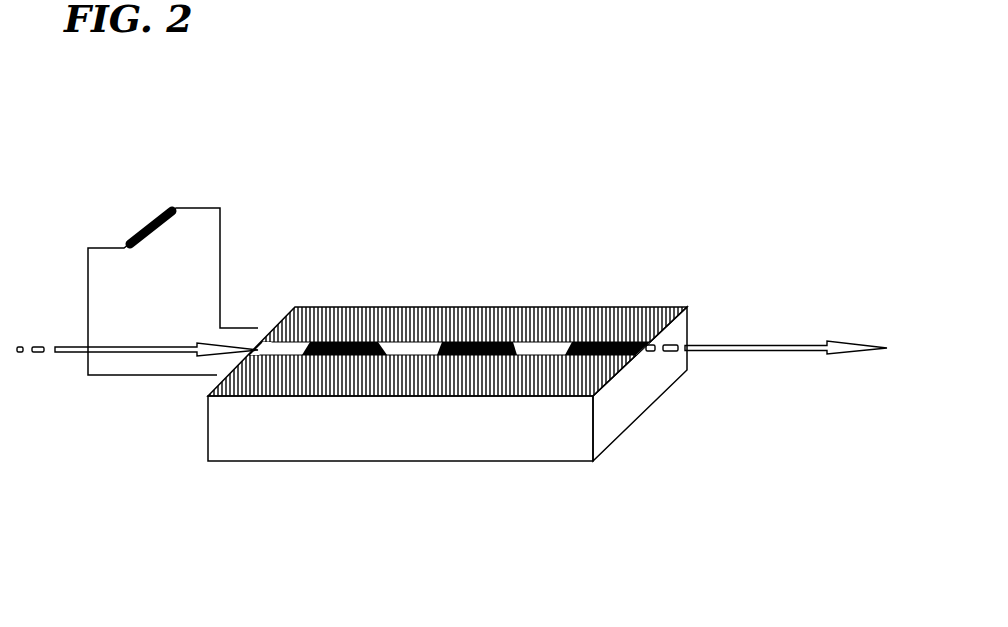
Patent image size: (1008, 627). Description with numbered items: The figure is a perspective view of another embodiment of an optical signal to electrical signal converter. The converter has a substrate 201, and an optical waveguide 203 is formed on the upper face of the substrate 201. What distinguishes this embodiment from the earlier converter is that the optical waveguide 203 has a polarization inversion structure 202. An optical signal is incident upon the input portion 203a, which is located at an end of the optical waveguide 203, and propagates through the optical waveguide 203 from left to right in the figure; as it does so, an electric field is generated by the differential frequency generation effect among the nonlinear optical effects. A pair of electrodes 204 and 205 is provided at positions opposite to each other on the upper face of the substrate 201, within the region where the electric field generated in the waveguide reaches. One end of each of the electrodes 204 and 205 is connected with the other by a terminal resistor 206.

The substrate 201 is at (400, 461).
The polarization inversion structure 202 is at (470, 343).
The optical waveguide 203 is at (512, 345).
The input portion 203a is at (260, 352).
The electrode 204 is at (628, 488).
The electrode 205 is at (748, 243).
The terminal resistor 206 is at (147, 218).